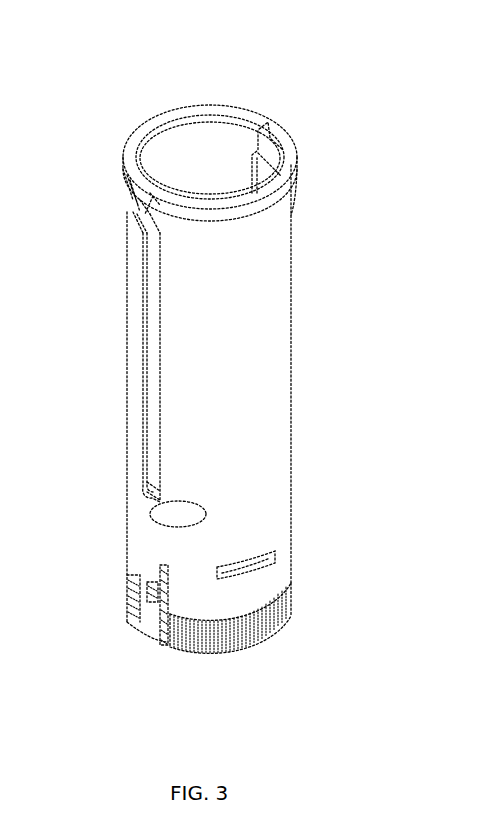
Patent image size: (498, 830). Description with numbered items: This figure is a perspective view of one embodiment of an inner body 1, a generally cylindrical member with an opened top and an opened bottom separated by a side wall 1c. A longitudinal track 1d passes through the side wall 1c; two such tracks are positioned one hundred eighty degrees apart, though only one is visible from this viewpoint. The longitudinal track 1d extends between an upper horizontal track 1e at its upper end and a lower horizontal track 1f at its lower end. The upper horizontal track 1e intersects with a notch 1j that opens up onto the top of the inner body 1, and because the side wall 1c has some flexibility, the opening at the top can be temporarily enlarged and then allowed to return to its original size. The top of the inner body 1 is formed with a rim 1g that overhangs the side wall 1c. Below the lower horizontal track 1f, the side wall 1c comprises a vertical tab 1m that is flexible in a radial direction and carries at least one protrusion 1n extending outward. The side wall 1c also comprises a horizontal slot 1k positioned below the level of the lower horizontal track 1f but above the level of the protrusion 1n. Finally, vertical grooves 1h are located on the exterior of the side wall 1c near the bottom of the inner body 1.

The inner body 1 is at (302, 117).
The side wall 1c is at (262, 317).
The longitudinal track 1d is at (155, 372).
The upper horizontal track 1e is at (138, 217).
The lower horizontal track 1f is at (183, 513).
The rim 1g is at (297, 162).
The vertical grooves 1h is at (277, 615).
The notch 1j is at (152, 194).
The horizontal slot 1k is at (260, 560).
The vertical tab 1m is at (148, 625).
The protrusion 1n is at (140, 592).